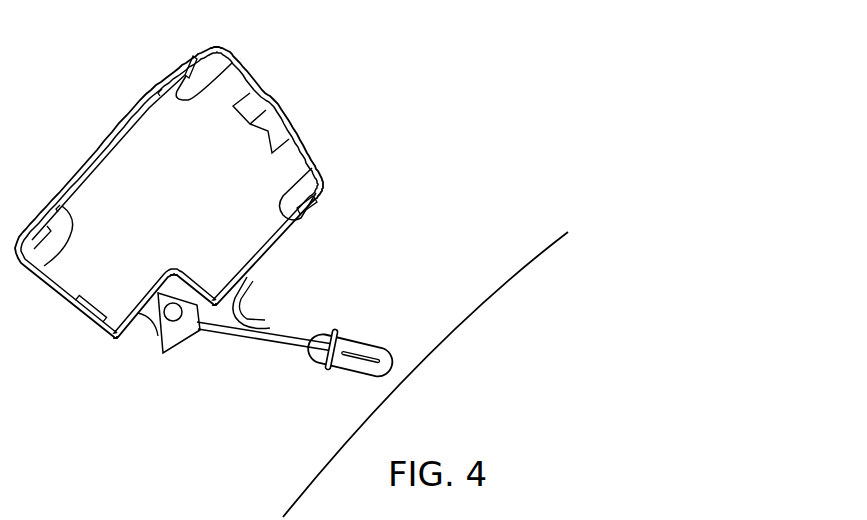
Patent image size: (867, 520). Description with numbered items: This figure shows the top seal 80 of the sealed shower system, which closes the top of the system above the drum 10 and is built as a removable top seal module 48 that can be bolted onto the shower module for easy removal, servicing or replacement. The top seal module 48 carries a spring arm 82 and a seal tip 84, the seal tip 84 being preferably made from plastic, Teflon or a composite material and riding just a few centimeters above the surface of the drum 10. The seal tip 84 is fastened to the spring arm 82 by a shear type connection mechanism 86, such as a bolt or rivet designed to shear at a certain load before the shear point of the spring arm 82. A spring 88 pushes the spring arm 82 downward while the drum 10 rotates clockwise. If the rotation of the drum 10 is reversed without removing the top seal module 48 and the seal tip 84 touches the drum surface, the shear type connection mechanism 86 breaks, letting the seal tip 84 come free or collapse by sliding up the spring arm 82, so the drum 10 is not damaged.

The drum 10 is at (494, 292).
The top seal module 48 is at (234, 59).
The top seal 80 is at (310, 382).
The spring arm 82 is at (285, 347).
The seal tip 84 is at (368, 341).
The shear type connection mechanism 86 is at (336, 331).
The spring 88 is at (245, 309).